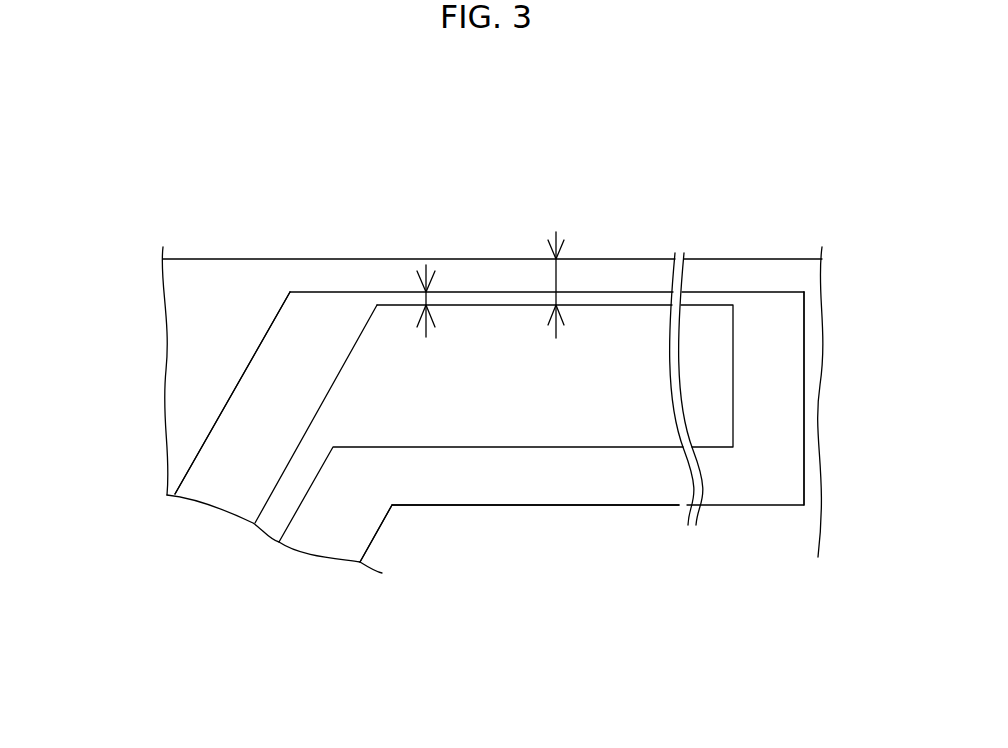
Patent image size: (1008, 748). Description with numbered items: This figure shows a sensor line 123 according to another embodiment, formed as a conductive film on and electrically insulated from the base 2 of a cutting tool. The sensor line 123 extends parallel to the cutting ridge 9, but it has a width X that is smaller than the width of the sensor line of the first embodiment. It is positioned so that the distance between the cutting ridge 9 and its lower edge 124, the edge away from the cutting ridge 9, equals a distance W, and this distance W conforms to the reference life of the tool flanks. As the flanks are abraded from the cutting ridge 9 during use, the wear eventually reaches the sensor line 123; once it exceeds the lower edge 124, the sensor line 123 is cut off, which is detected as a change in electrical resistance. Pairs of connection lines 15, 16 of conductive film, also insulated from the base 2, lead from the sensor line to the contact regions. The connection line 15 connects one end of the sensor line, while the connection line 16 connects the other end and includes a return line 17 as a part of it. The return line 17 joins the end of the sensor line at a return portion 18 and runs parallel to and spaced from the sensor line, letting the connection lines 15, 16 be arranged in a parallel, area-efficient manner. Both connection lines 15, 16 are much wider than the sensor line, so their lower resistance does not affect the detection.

The base 2 is at (242, 285).
The cutting ridge 9 is at (474, 258).
The sensor line 123 is at (637, 295).
The edge 124 is at (597, 305).
The connection line 15 is at (227, 462).
The connection line 16 is at (348, 513).
The return line 17 is at (607, 483).
The return portion 18 is at (773, 395).
The width X is at (425, 300).
The distance W is at (556, 278).